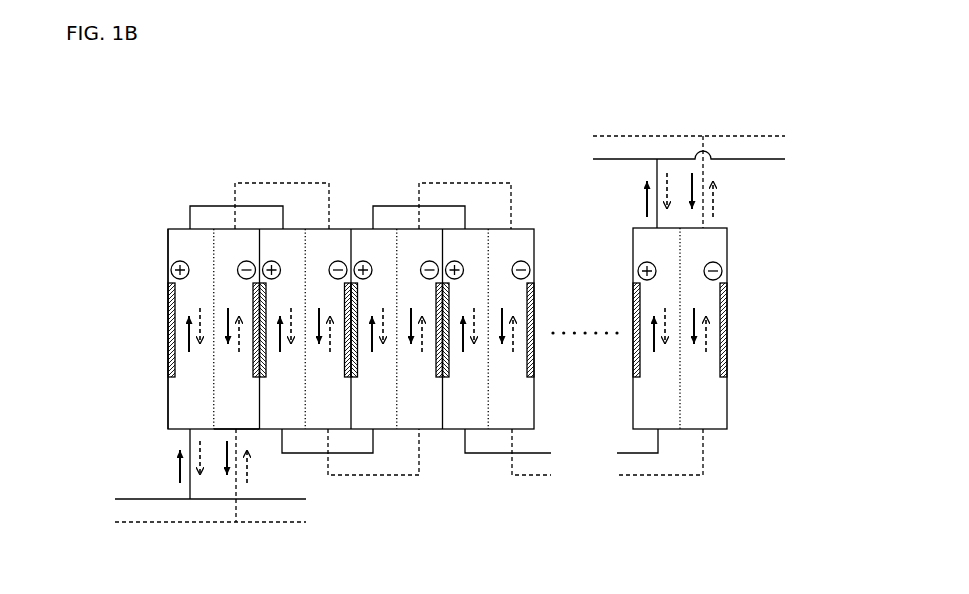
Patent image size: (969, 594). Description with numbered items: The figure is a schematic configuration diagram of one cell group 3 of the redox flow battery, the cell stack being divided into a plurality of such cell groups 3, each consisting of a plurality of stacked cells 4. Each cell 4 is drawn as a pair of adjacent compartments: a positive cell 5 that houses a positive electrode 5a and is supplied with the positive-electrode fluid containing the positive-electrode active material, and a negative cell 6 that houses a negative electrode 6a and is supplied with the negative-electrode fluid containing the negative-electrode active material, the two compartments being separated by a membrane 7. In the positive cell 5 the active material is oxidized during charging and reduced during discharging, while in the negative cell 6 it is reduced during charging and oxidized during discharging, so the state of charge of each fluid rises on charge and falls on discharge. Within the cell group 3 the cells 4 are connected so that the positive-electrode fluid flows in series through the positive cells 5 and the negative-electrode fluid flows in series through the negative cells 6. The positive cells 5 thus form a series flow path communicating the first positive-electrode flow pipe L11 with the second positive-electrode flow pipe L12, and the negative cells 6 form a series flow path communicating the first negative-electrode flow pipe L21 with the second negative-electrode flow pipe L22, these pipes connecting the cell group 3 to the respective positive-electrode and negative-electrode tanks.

The cell group 3 is at (770, 283).
The cell 4 is at (259, 171).
The positive cell 5 is at (199, 414).
The negative cell 6 is at (243, 414).
The positive electrode 5a is at (167, 348).
The negative electrode 6a is at (254, 366).
The membrane 7 is at (213, 253).
The first positive-electrode flow pipe L11 is at (135, 499).
The second negative-electrode flow pipe L22 is at (133, 523).
The first negative-electrode flow pipe L21 is at (763, 135).
The second positive-electrode flow pipe L12 is at (762, 160).